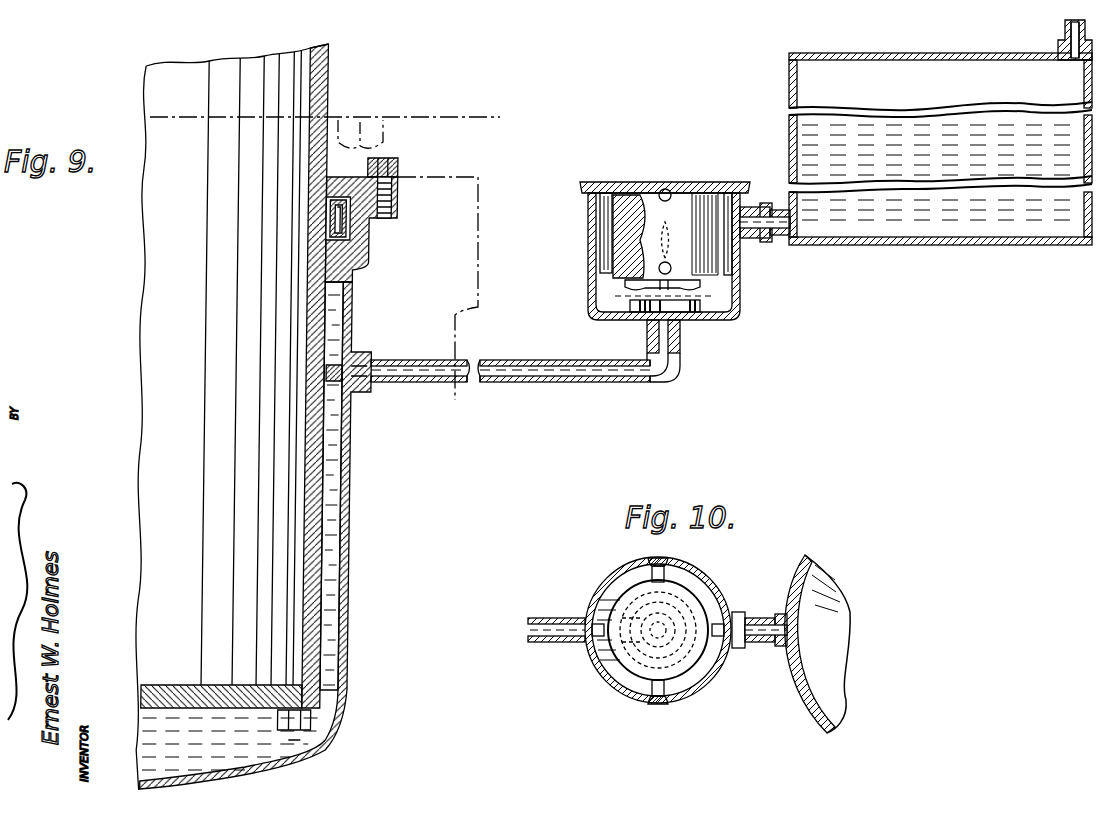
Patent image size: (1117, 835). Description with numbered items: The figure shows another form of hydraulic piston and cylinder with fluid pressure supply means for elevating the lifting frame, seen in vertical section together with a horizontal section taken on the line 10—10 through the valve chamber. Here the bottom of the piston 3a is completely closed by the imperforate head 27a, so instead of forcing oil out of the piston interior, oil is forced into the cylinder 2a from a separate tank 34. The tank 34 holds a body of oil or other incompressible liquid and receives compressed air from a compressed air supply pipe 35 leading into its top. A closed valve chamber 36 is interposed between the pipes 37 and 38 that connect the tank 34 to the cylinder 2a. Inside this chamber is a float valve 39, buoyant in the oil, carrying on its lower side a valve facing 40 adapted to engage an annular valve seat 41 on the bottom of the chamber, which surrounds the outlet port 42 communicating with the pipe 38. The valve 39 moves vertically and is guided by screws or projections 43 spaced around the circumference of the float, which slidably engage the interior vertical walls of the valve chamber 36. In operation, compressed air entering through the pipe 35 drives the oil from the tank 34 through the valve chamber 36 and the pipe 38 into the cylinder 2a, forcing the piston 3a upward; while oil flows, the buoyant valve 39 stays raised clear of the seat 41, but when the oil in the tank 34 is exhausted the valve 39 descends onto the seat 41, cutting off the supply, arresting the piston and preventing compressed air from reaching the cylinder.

In FIG. 9, the cylinder 2a is at (347, 318).
In FIG. 9, the piston 3a is at (318, 468).
In FIG. 9, the imperforate head 27a is at (180, 678).
In FIG. 9, the section line 10— 10 is at (564, 236).
In FIG. 9, the tank 34 is at (789, 128).
In FIG. 10, the tank 34 is at (802, 703).
In FIG. 9, the compressed air supply pipe 35 is at (1060, 34).
In FIG. 9, the valve chamber 36 is at (742, 300).
In FIG. 10, the valve chamber 36 is at (617, 580).
In FIG. 9, the pipe 37 is at (762, 240).
In FIG. 10, the pipe 37 is at (757, 618).
In FIG. 9, the pipe 38 is at (540, 384).
In FIG. 10, the pipe 38 is at (543, 645).
In FIG. 9, the float valve 39 is at (669, 192).
In FIG. 10, the float valve 39 is at (637, 665).
In FIG. 9, the valve facing 40 is at (697, 292).
In FIG. 10, the valve facing 40 is at (690, 650).
In FIG. 9, the annular valve seat 41 is at (630, 308).
In FIG. 9, the outlet port 42 is at (650, 333).
In FIG. 9, the screws or projections 43 is at (600, 282).
In FIG. 10, the screws or projections 43 is at (710, 592).